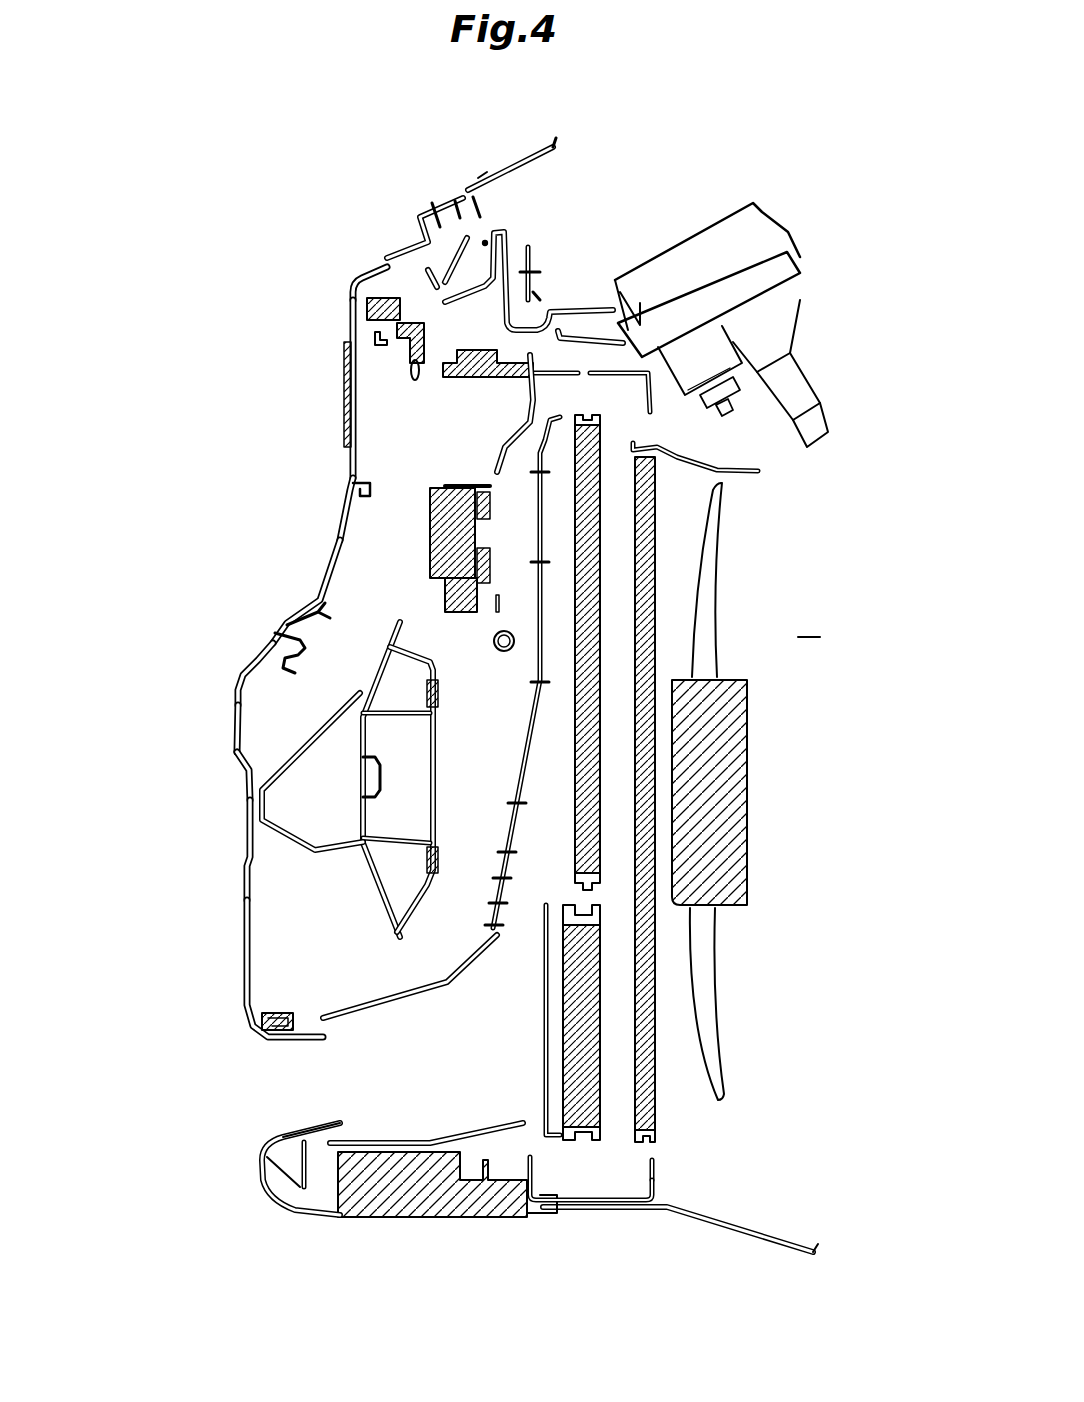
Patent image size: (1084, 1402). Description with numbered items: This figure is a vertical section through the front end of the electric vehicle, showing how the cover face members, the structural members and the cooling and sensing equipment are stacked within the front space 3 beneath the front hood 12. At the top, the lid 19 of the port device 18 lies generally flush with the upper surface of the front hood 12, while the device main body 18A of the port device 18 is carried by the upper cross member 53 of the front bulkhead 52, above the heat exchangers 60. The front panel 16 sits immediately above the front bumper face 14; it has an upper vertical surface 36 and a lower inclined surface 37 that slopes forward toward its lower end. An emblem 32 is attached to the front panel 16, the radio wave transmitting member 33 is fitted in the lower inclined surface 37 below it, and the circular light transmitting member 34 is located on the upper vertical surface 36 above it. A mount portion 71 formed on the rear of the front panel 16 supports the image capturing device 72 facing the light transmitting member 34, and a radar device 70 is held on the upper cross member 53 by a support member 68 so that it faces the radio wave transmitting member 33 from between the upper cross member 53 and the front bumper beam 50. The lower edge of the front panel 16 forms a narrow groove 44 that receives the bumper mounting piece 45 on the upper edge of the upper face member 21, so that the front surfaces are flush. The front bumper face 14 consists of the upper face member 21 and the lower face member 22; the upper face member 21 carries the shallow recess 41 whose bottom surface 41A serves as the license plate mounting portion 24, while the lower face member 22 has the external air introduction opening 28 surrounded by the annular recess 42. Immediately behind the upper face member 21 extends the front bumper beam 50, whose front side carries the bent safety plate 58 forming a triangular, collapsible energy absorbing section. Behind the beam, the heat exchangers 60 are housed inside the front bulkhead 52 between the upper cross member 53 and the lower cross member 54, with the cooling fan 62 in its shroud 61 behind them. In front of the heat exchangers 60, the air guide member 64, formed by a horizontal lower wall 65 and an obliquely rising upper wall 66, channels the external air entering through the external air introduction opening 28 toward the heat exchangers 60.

The front space 3 is at (809, 623).
The front hood 12 is at (400, 243).
The front bumper face 14 is at (197, 876).
The front panel 16 is at (330, 456).
The port device 18 is at (489, 160).
The device main body 18A is at (790, 290).
The lid 19 is at (530, 153).
The upper face member 21 is at (232, 735).
The lower face member 22 is at (270, 1170).
The license plate mounting portion 24 is at (240, 825).
The external air introduction opening 28 is at (282, 1040).
The emblem 32 is at (347, 368).
The radio wave transmitting member 33 is at (330, 537).
The light transmitting member 34 is at (353, 306).
The upper vertical surface 36 is at (352, 332).
The lower inclined surface 37 is at (287, 628).
The recess 41 is at (232, 847).
The bottom surface 41A is at (245, 915).
The annular recess 42 is at (256, 1133).
The narrow groove 44 is at (260, 660).
The bumper mounting piece 45 is at (300, 648).
The front bumper beam 50 is at (452, 692).
The front bulkhead 52 is at (668, 1160).
The upper cross member 53 is at (656, 400).
The lower cross member 54 is at (657, 1183).
The safety plate 58 is at (310, 755).
The heat exchangers 60 is at (580, 527).
The shroud 61 is at (760, 472).
The cooling fan 62 is at (745, 805).
The air guide member 64 is at (498, 1147).
The lower wall 65 is at (393, 1140).
The upper wall 66 is at (397, 1002).
The support member 68 is at (510, 437).
The radar device 70 is at (433, 493).
The mount portion 71 is at (398, 368).
The image capturing device 72 is at (383, 297).